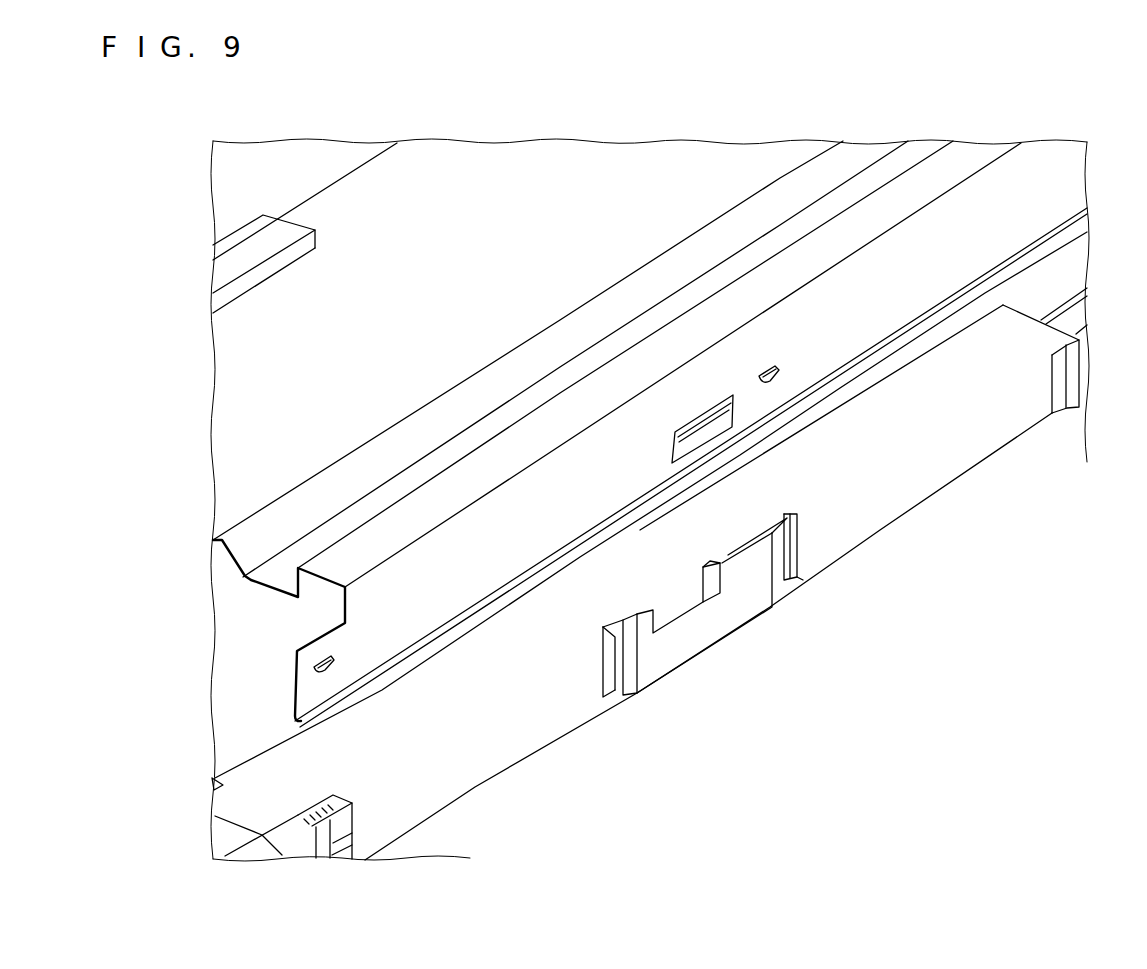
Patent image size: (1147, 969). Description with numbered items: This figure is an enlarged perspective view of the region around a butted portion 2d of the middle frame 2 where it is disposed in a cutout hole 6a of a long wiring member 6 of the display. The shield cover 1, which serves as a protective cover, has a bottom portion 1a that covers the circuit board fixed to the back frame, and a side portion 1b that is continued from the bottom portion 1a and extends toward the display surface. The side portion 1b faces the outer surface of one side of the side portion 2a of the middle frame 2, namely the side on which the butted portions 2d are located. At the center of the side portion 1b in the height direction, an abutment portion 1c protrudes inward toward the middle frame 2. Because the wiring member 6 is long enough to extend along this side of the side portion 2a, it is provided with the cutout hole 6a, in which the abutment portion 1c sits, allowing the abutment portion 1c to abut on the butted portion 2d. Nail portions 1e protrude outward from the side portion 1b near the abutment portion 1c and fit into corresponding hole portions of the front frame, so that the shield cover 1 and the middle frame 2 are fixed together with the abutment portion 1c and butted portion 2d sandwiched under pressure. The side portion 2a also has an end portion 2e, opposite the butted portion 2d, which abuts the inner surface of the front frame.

The shield cover 1 is at (728, 168).
The bottom portion 1a is at (603, 155).
The side portion 1b is at (1062, 165).
The abutment portion 1c is at (662, 430).
The nail portion 1e is at (779, 369).
The middle frame 2 is at (712, 623).
The side portion 2a is at (753, 597).
The butted portion 2d is at (683, 613).
The end portion 2e is at (662, 680).
The wiring member 6 is at (947, 455).
The cutout hole 6a is at (784, 532).